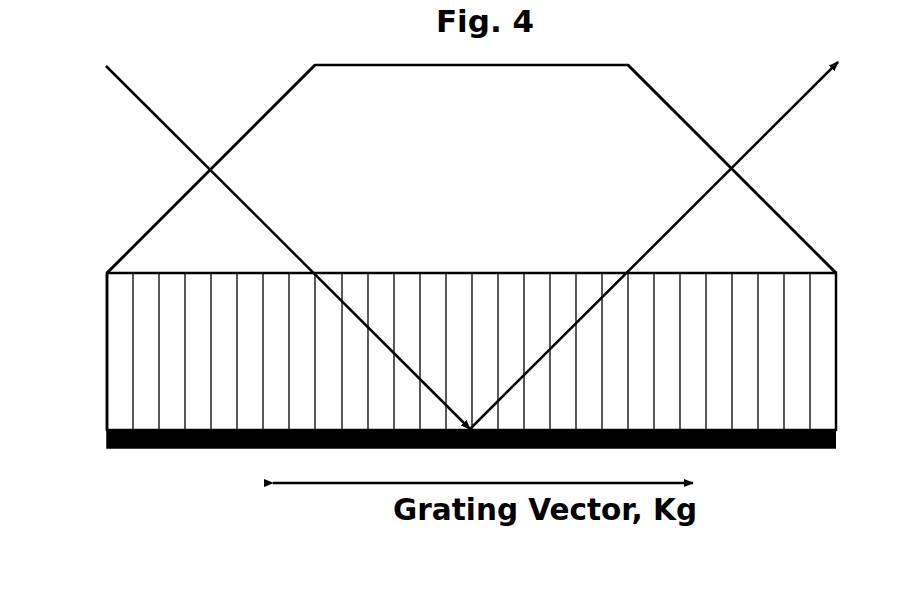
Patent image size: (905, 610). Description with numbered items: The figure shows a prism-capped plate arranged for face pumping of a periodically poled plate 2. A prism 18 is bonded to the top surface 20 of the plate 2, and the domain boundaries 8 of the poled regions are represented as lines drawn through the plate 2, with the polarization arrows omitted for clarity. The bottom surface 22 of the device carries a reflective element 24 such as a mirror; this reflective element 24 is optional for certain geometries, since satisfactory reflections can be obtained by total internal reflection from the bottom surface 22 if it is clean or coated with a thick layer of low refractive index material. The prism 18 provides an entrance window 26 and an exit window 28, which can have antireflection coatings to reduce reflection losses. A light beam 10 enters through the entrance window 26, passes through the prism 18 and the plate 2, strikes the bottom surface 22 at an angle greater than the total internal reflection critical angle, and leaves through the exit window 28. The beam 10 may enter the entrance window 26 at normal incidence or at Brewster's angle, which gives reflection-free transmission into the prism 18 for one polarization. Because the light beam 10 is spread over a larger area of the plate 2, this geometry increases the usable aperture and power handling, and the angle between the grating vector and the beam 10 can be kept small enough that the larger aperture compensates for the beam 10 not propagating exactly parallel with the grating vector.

The periodically poled plate 2 is at (92, 352).
The domain boundaries 8 is at (733, 412).
The light beam 10 is at (157, 115).
The prism 18 is at (403, 100).
The top surface 20 is at (597, 272).
The bottom surface 22 is at (107, 430).
The reflective element 24 is at (143, 448).
The entrance window 26 is at (176, 200).
The exit window 28 is at (750, 183).